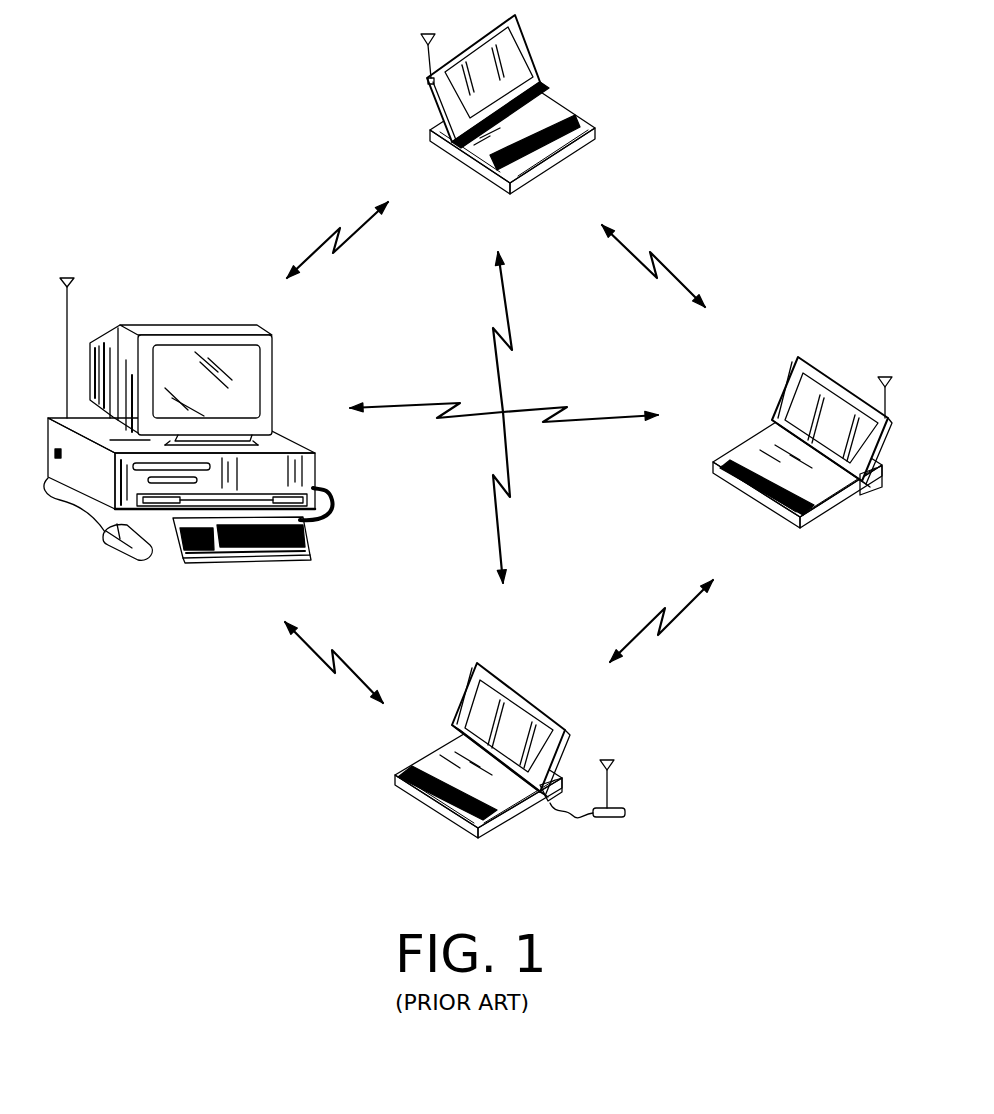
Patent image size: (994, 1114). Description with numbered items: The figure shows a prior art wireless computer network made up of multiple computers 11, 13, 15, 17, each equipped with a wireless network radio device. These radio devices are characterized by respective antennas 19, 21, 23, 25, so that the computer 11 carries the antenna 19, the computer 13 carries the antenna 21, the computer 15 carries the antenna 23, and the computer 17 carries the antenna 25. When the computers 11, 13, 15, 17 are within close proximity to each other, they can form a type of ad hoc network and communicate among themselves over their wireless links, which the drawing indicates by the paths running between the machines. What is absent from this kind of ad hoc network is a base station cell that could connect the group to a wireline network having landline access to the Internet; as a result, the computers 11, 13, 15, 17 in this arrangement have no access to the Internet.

The computer 11 is at (565, 108).
The computer 13 is at (877, 492).
The computer 15 is at (207, 324).
The computer 17 is at (417, 757).
The antenna 19 is at (427, 47).
The antenna 21 is at (877, 392).
The antenna 23 is at (70, 302).
The antenna 25 is at (613, 778).